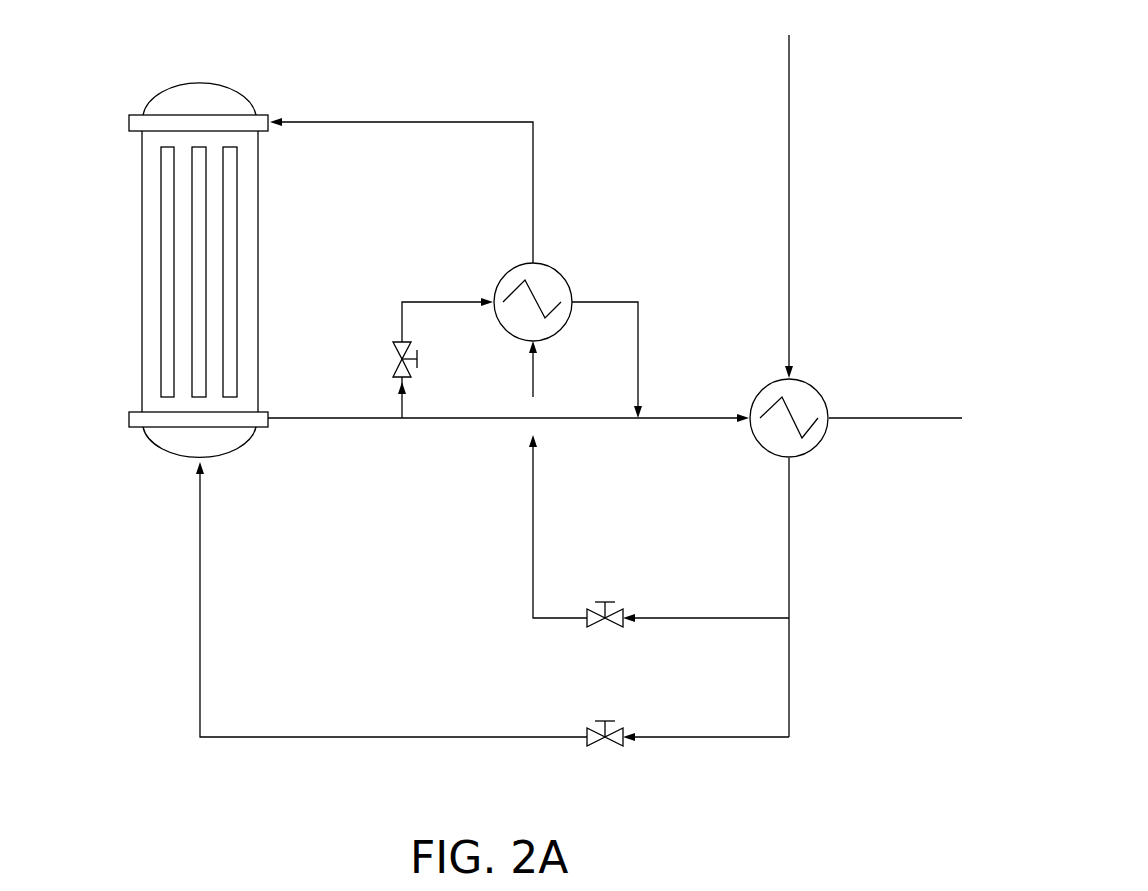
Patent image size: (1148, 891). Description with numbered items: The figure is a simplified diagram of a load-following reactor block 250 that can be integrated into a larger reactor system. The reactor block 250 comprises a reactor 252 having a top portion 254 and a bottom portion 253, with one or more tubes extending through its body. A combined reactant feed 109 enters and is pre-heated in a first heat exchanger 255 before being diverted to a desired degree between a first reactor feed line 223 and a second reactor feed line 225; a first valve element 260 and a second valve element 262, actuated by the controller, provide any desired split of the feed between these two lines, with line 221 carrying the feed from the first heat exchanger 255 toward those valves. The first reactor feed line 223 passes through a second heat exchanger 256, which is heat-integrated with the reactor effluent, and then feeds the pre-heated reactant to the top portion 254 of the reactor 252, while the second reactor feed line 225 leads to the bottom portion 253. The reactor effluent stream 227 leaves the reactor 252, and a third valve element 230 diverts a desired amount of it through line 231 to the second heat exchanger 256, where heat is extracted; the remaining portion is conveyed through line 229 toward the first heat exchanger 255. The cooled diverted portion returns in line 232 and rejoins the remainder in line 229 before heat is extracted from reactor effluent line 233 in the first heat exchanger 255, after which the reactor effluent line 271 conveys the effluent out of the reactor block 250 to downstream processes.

The combined reactant feed 109 is at (788, 143).
The line 221 is at (790, 540).
The first reactor feed line 223 is at (535, 190).
The second reactor feed line 225 is at (200, 655).
The reactor effluent stream 227 is at (300, 420).
The line 229 is at (418, 420).
The third valve element 230 is at (392, 362).
The line 231 is at (402, 300).
The line 232 is at (638, 300).
The reactor effluent line 233 is at (690, 420).
The reactor block 250 is at (170, 573).
The reactor 252 is at (142, 262).
The bottom portion 253 is at (157, 455).
The top portion 254 is at (129, 123).
The first heat exchanger 255 is at (760, 388).
The second heat exchanger 256 is at (507, 268).
The first valve element 260 is at (623, 612).
The second valve element 262 is at (623, 732).
The reactor effluent line 271 is at (895, 418).